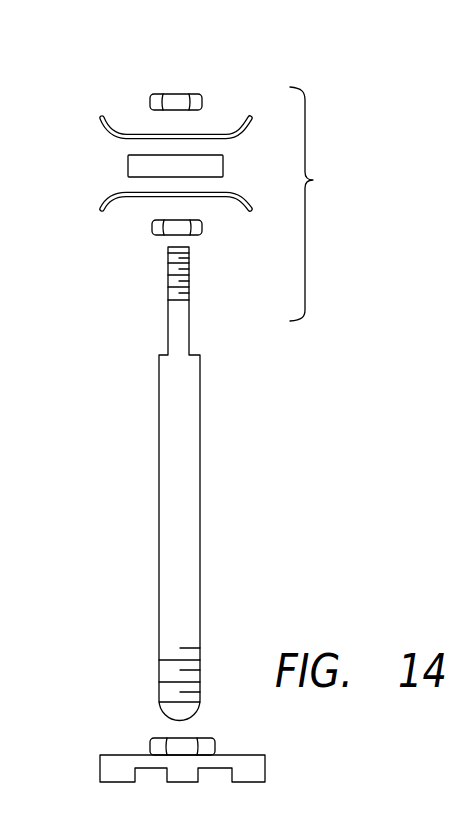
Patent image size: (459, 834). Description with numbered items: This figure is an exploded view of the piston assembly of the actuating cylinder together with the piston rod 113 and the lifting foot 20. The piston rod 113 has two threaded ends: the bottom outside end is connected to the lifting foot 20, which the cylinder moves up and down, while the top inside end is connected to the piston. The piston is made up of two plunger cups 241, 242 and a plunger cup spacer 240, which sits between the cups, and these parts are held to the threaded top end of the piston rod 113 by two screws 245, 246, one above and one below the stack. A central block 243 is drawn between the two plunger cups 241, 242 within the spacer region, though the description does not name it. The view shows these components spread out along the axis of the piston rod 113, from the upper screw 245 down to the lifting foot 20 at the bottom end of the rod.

The screw 245 is at (175, 94).
The plunger cup 241 is at (247, 134).
The spacer block 243 is at (128, 165).
The plunger cup 242 is at (248, 195).
The plunger cup spacer 240 is at (329, 204).
The screw 246 is at (150, 227).
The piston rod 113 is at (203, 527).
The lifting foot 20 is at (265, 767).